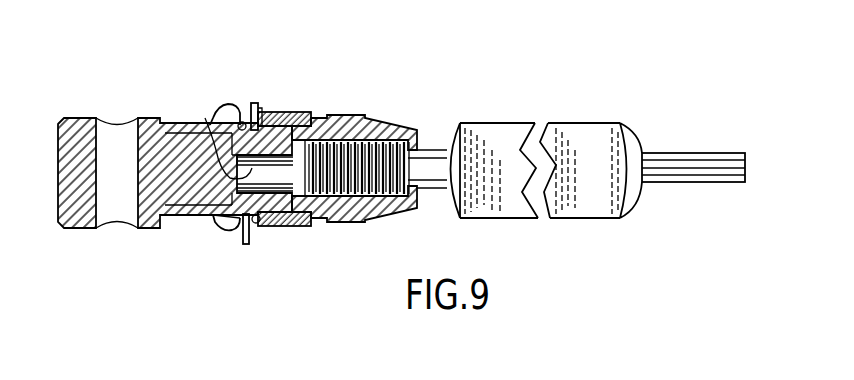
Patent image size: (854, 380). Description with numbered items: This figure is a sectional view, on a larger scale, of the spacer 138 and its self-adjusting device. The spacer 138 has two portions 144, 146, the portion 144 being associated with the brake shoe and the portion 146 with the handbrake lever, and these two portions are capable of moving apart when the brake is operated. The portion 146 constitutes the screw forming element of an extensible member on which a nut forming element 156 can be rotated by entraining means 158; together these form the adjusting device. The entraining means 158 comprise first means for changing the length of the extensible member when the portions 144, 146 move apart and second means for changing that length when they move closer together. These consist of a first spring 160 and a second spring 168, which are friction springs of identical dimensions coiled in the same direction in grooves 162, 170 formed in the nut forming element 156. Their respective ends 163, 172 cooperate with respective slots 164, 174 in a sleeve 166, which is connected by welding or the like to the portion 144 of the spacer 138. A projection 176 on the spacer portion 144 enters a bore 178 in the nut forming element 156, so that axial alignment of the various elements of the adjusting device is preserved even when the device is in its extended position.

The spacer 138 is at (486, 117).
The portion of the spacer 144 is at (75, 140).
The portion of the spacer 146 is at (600, 155).
The nut forming element 156 is at (353, 208).
The entraining means 158 is at (226, 240).
The first spring 160 is at (270, 236).
The groove 162 is at (248, 104).
The end of the first spring 163 is at (262, 108).
The slot 164 is at (263, 112).
The sleeve 166 is at (175, 231).
The second spring 168 is at (230, 105).
The groove 170 is at (225, 226).
The end of the second spring 172 is at (244, 245).
The slot 174 is at (253, 240).
The projection 176 is at (277, 176).
The bore 178 is at (205, 118).